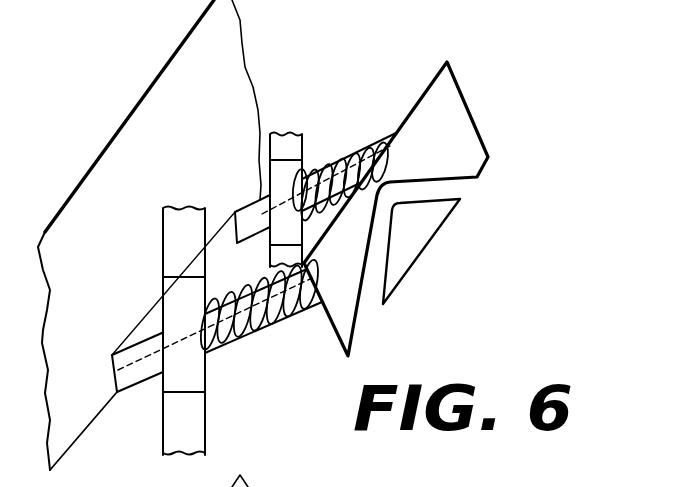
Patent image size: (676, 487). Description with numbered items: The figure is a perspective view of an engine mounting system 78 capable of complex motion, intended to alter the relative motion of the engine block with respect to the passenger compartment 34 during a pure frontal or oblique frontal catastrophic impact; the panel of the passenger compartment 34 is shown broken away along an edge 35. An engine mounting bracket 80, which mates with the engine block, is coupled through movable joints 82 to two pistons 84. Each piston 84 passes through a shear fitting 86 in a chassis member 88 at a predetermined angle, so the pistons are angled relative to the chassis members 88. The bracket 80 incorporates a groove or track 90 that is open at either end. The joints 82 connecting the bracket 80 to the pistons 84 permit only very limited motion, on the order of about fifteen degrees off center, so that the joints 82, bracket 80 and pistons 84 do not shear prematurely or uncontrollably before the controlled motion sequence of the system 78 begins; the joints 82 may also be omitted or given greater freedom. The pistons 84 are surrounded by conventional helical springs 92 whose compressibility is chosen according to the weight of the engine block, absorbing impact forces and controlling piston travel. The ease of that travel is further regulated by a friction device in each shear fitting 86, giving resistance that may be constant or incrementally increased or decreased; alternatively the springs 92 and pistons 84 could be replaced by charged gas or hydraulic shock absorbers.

The passenger compartment 34 is at (103, 33).
The wall edge break line 35 is at (177, 87).
The engine mounting system 78 is at (196, 158).
The engine mounting bracket 80 is at (458, 122).
The movable joints 82 is at (315, 312).
The pistons 84 is at (257, 225).
The shear fittings 86 is at (282, 173).
The chassis members 88 is at (280, 145).
The track 90 is at (372, 296).
The helical springs 92 is at (337, 156).